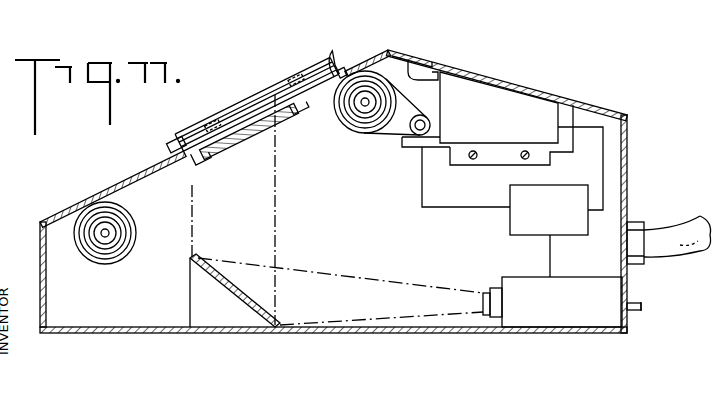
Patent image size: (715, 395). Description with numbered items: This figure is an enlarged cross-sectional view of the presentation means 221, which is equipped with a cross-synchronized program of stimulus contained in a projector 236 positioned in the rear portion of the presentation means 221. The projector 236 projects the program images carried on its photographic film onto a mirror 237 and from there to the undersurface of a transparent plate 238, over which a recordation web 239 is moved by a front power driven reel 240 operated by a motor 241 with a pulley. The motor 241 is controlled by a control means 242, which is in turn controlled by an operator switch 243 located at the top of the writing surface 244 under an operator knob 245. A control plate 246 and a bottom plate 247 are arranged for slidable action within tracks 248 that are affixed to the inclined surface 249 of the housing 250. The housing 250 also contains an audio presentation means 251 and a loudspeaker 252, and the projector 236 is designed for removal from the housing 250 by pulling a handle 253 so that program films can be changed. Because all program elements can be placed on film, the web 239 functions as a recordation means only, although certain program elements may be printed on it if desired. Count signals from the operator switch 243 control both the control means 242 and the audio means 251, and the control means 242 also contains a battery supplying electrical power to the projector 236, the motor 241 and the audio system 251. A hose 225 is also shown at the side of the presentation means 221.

The presentation means 221 is at (557, 70).
The flexible hose 225 is at (677, 232).
The projector 236 is at (580, 314).
The mirror 237 is at (233, 291).
The transparent plate 238 is at (235, 148).
The recordation web 239 is at (147, 181).
The front power driven reel 240 is at (372, 78).
The motor 241 is at (413, 132).
The control means 242 is at (567, 224).
The operator switch 243 is at (340, 68).
The writing surface 244 is at (258, 96).
The operator knob 245 is at (322, 62).
The control plate 246 is at (298, 84).
The bottom plate 247 is at (178, 140).
The tracks 248 is at (227, 116).
The inclined surface 249 is at (92, 198).
The housing 250 is at (355, 229).
The audio presentation means 251 is at (519, 124).
The loudspeaker 252 is at (430, 62).
The handle 253 is at (641, 307).